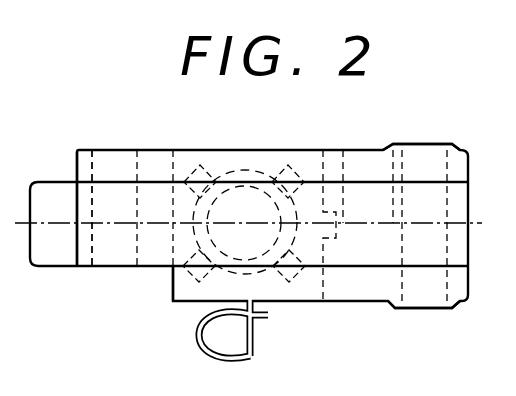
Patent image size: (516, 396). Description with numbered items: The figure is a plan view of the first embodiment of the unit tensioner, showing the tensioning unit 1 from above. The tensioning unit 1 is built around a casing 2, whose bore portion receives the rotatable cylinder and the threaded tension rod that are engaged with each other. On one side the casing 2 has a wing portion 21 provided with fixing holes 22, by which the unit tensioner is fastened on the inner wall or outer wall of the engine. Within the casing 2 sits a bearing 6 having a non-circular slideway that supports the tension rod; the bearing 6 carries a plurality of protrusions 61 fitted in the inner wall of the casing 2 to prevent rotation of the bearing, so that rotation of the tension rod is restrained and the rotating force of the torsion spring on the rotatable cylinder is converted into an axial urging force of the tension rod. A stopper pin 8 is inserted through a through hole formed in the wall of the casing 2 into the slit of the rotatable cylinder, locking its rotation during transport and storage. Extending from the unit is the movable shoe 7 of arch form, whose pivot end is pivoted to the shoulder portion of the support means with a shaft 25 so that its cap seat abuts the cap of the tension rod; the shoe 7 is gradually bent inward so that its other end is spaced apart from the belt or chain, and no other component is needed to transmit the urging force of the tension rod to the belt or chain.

The tensioning unit 1 is at (416, 116).
The casing 2 is at (166, 149).
The wing portion 21 is at (77, 159).
The fixing holes 22 is at (92, 165).
The shaft 25 is at (447, 144).
The bearing 6 is at (272, 268).
The protrusions 61 is at (172, 290).
The movable shoe 7 is at (71, 263).
The stopper pin 8 is at (255, 344).